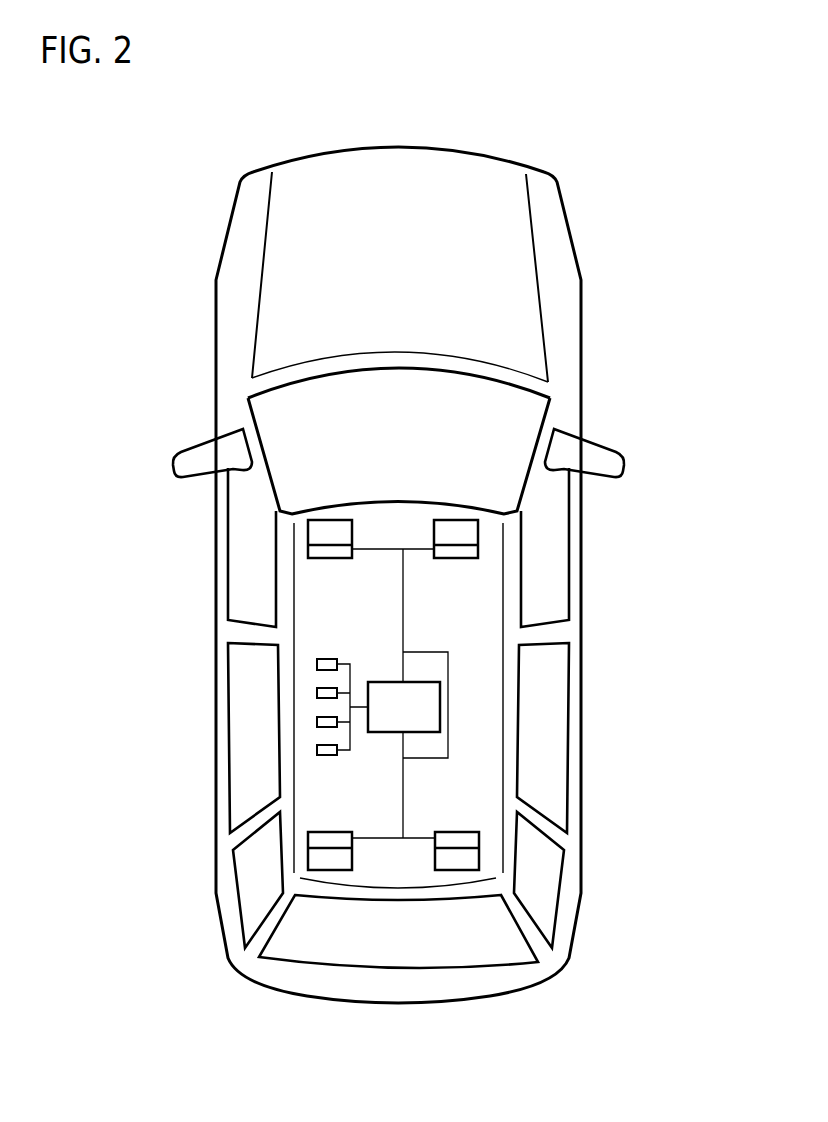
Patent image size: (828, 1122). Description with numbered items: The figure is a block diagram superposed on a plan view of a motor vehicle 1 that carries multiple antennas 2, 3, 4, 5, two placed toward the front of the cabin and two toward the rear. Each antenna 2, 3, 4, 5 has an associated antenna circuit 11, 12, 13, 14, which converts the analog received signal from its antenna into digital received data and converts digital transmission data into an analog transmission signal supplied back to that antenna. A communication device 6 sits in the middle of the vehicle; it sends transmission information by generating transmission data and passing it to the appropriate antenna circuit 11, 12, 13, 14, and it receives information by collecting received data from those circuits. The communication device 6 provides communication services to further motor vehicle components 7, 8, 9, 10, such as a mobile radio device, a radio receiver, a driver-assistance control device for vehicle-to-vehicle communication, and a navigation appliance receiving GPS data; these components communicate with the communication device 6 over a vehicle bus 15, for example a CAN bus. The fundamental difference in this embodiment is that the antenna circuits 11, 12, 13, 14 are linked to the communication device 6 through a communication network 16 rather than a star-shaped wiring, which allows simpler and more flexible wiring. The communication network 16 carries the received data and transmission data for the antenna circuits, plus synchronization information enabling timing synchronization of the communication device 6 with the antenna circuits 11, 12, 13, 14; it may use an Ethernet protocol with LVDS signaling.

The motor vehicle 1 is at (623, 410).
The antenna 2 is at (353, 528).
The antenna 3 is at (453, 527).
The antenna 4 is at (328, 871).
The antenna 5 is at (457, 871).
The communication device 6 is at (383, 682).
The motor vehicle component 7 is at (317, 663).
The motor vehicle component 8 is at (317, 692).
The motor vehicle component 9 is at (317, 720).
The motor vehicle component 10 is at (317, 748).
The antenna circuit 11 is at (346, 559).
The antenna circuit 12 is at (466, 559).
The antenna circuit 13 is at (325, 832).
The antenna circuit 14 is at (443, 832).
The vehicle bus 15 is at (261, 669).
The communication network 16 is at (494, 691).